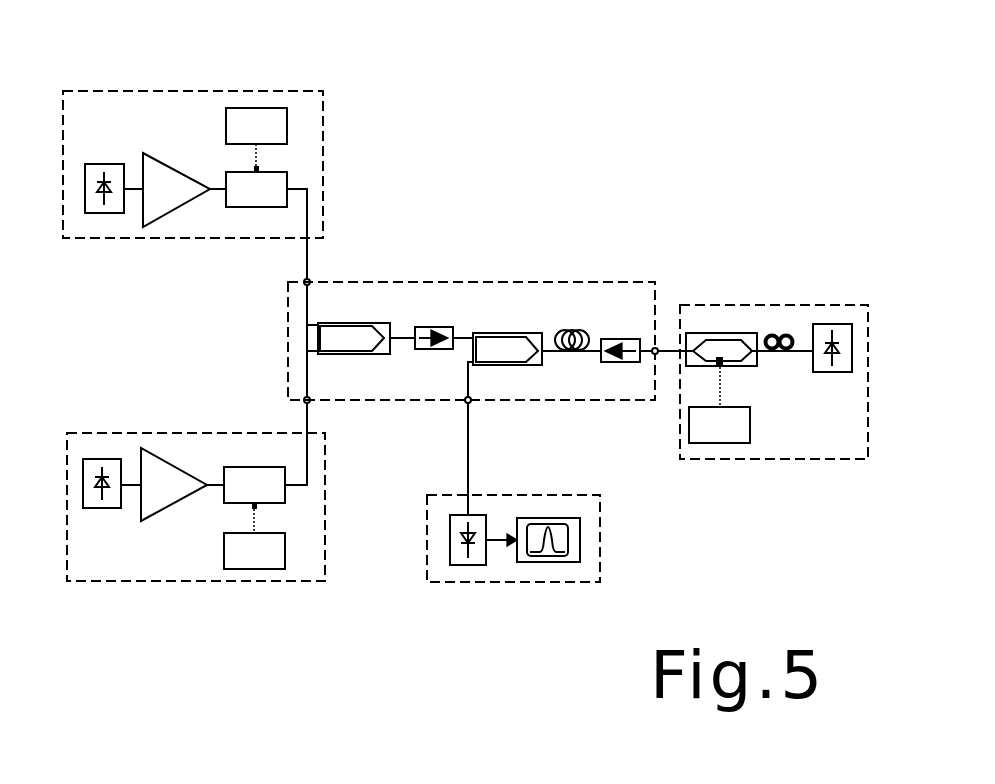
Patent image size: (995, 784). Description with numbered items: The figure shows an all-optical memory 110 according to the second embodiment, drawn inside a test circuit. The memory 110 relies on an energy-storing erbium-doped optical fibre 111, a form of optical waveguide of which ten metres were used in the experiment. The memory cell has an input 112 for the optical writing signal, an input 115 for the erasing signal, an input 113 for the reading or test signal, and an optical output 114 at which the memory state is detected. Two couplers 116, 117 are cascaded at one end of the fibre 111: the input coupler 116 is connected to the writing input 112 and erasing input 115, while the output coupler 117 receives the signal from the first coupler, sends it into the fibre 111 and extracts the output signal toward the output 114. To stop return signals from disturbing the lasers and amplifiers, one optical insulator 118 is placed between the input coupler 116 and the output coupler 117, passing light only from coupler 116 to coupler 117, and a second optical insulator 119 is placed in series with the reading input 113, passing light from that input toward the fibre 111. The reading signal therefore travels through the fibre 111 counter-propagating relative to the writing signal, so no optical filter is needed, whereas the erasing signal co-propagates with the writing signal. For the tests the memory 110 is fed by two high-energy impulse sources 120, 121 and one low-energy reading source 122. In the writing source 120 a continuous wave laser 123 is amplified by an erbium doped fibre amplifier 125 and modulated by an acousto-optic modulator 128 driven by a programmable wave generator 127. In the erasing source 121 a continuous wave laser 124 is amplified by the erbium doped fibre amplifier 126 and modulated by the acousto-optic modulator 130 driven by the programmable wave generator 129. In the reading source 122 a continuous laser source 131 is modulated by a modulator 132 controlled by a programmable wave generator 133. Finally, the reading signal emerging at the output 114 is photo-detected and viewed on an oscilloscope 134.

The memory 110 is at (550, 282).
The erbium-doped optical fibre 111 is at (574, 350).
The writing input 112 is at (307, 282).
The reading input 113 is at (657, 354).
The optical output 114 is at (462, 403).
The erasing input 115 is at (307, 401).
The input coupler 116 is at (362, 323).
The output coupler 117 is at (498, 333).
The optical insulator 118 is at (424, 327).
The optical insulator 119 is at (622, 339).
The writing impulse source 120 is at (80, 91).
The erasing impulse source 121 is at (95, 581).
The reading impulse source 122 is at (802, 459).
The continuous wave laser 123 is at (93, 213).
The continuous wave laser 124 is at (93, 459).
The erbium doped fibre amplifier 125 is at (162, 170).
The erbium doped fibre amplifier 126 is at (152, 512).
The programmable wave generator 127 is at (285, 113).
The acoustic optical modulator 128 is at (287, 172).
The programmable wave generator 129 is at (252, 569).
The acoustic optical modulator 130 is at (278, 500).
The continuous laser source 131 is at (843, 324).
The modulator 132 is at (730, 333).
The programmable wave generator 133 is at (720, 443).
The oscilloscope 134 is at (453, 582).